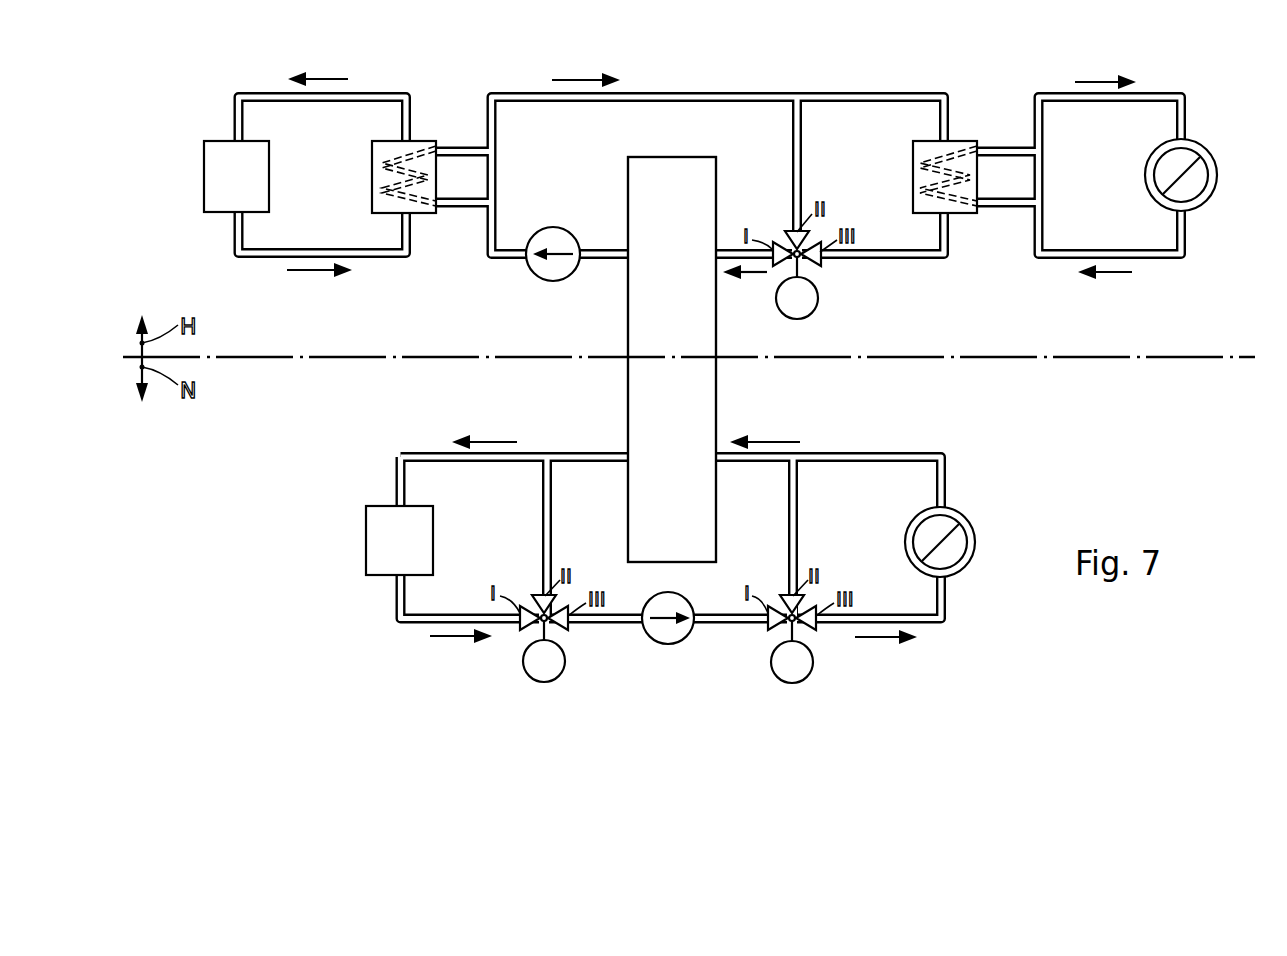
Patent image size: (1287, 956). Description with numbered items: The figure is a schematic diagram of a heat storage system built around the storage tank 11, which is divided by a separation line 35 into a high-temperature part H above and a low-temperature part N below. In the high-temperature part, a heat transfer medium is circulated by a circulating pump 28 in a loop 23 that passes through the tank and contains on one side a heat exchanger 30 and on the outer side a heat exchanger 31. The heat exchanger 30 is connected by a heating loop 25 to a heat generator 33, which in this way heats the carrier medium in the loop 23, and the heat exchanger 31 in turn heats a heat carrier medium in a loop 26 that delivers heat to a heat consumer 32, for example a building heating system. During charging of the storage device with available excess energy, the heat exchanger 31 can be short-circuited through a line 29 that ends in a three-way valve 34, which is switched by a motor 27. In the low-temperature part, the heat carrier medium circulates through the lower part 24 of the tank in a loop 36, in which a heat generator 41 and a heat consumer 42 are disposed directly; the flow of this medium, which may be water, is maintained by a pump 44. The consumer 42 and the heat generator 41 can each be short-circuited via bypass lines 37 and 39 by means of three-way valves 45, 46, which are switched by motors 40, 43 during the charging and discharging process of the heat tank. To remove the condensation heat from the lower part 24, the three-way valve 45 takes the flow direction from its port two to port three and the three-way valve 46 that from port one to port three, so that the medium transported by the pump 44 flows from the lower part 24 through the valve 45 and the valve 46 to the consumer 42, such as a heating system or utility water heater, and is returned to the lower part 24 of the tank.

The tank 11 is at (642, 307).
The loop 23 is at (588, 108).
The lower part of the tank 24 is at (700, 391).
The heating loop 25 is at (330, 106).
The loop 26 is at (1122, 108).
The motor 27 is at (803, 310).
The circulating pump 28 is at (553, 267).
The line 29 is at (801, 150).
The heat exchanger 30 is at (417, 142).
The heat exchanger 31 is at (955, 148).
The heat consumer 32 is at (1185, 163).
The heat generator 33 is at (228, 153).
The three-way valve 34 is at (820, 258).
The separation line 35 is at (1068, 360).
The loop 36 is at (884, 465).
The bypass line 37 is at (552, 517).
The bypass line 39 is at (797, 537).
The motor 40 is at (553, 675).
The heat generator 41 is at (388, 518).
The heat consumer 42 is at (957, 540).
The motor 43 is at (795, 678).
The pump 44 is at (668, 643).
The three-way valve 45 is at (540, 622).
The three-way valve 46 is at (800, 625).